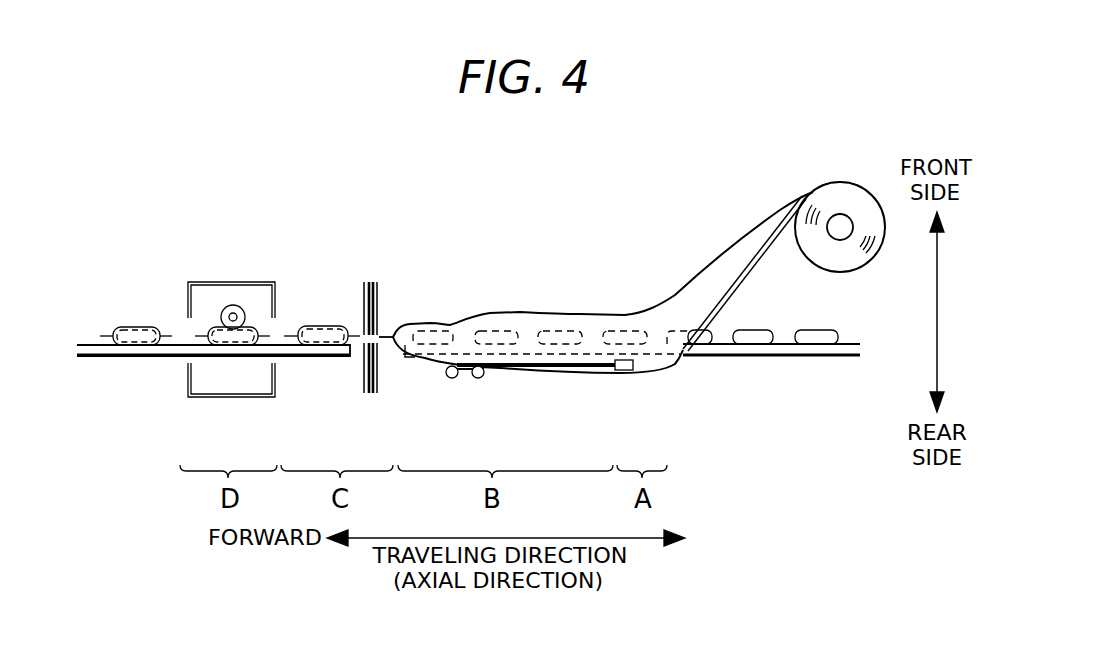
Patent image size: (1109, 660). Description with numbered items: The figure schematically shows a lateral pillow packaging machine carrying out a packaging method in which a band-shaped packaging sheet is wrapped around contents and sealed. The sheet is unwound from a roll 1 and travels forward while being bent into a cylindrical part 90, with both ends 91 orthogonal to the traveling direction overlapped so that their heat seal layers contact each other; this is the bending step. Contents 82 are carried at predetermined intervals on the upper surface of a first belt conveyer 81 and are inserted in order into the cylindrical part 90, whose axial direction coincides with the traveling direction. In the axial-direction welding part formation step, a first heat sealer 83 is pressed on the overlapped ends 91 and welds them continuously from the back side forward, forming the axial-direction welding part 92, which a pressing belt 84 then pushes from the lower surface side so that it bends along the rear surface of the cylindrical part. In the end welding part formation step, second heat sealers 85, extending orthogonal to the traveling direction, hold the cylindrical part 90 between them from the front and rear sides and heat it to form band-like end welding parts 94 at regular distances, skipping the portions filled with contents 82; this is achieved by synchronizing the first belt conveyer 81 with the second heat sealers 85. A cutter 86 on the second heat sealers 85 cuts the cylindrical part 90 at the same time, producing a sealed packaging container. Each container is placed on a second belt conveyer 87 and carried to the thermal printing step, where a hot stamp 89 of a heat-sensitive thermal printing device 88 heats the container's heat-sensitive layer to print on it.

The roll 1 is at (848, 197).
The first belt conveyer 81 is at (823, 348).
The contents 82 is at (753, 346).
The first heat sealer 83 is at (623, 372).
The pressing belt 84 is at (462, 380).
The second heat sealers 85 is at (364, 306).
The cutter 86 is at (379, 297).
The second belt conveyer 87 is at (148, 358).
The heat-sensitive thermal printing device 88 is at (203, 282).
The hot stamp 89 is at (233, 305).
The cylindrical part 90 is at (515, 305).
The ends 91 is at (744, 280).
The axial-direction welding part 92 is at (562, 370).
The end welding parts 94 is at (293, 329).